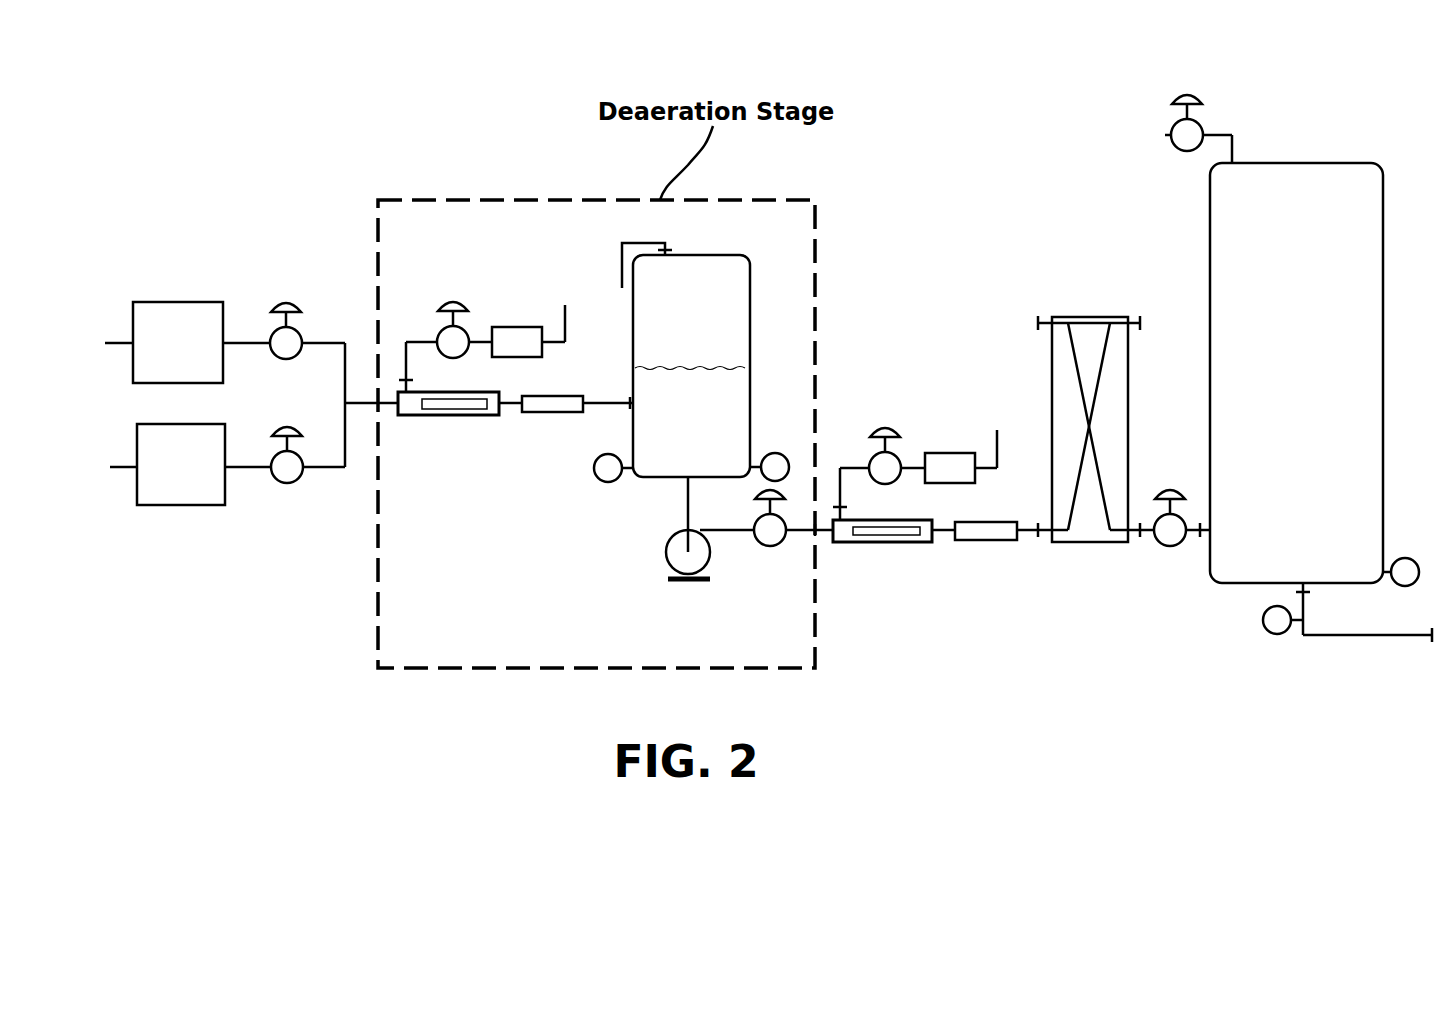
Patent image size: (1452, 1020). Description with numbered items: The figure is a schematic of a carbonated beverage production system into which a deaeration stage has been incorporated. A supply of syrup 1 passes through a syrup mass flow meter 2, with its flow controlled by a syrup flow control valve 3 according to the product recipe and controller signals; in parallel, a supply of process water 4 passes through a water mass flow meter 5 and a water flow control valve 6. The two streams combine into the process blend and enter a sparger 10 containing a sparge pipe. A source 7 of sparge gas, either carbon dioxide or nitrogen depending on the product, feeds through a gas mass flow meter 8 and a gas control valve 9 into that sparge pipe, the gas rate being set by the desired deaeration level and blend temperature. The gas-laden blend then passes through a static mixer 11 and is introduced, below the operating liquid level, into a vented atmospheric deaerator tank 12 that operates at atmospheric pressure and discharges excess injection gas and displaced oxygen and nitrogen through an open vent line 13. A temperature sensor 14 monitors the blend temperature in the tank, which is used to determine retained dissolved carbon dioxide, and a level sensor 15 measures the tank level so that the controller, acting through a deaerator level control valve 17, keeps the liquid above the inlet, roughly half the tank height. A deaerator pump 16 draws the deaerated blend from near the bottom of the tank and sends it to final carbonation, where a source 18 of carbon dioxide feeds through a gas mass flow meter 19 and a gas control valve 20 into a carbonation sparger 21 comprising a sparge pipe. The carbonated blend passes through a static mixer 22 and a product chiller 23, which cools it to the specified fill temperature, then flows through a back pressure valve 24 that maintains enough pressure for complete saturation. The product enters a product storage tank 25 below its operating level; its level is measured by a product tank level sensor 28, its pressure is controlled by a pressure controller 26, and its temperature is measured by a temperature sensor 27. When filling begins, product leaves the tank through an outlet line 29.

The supply of syrup 1 is at (108, 343).
The syrup mass flow meter 2 is at (178, 342).
The syrup flow control valve 3 is at (284, 312).
The supply of process water 4 is at (110, 467).
The water mass flow meter 5 is at (181, 464).
The water flow control valve 6 is at (285, 437).
The source of sparge gas 7 is at (554, 306).
The gas mass flow meter 8 is at (505, 342).
The gas control valve 9 is at (434, 325).
The sparger 10 is at (448, 420).
The static mixer 11 is at (566, 419).
The vented atmospheric deaerator tank 12 is at (691, 366).
The vent line 13 is at (632, 278).
The temperature sensor 14 is at (592, 475).
The level sensor 15 is at (775, 454).
The deaerator pump 16 is at (710, 549).
The deaerator level control valve 17 is at (793, 536).
The source of CO2 18 is at (989, 431).
The gas mass flow meter 19 is at (938, 468).
The gas control valve 20 is at (867, 456).
The carbonation sparger 21 is at (882, 547).
The static mixer 22 is at (992, 548).
The product chiller 23 is at (1096, 413).
The back pressure valve 24 is at (1182, 535).
The product storage tank 25 is at (1296, 373).
The pressure controller 26 is at (1170, 129).
The temperature sensor 27 is at (1261, 620).
The product tank level sensor 28 is at (1414, 562).
The outlet line 29 is at (1372, 626).